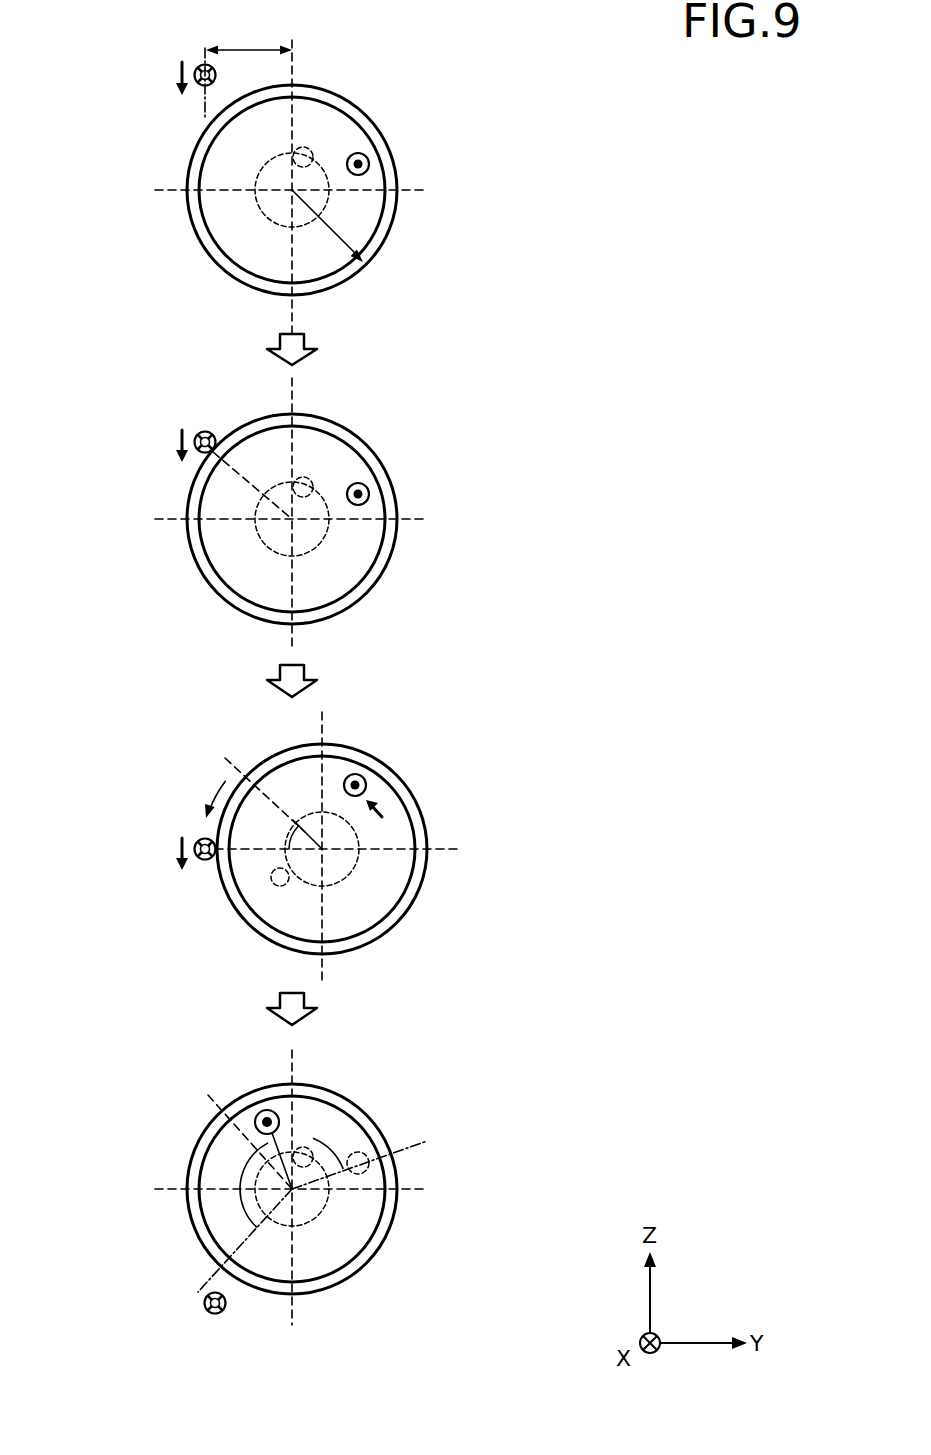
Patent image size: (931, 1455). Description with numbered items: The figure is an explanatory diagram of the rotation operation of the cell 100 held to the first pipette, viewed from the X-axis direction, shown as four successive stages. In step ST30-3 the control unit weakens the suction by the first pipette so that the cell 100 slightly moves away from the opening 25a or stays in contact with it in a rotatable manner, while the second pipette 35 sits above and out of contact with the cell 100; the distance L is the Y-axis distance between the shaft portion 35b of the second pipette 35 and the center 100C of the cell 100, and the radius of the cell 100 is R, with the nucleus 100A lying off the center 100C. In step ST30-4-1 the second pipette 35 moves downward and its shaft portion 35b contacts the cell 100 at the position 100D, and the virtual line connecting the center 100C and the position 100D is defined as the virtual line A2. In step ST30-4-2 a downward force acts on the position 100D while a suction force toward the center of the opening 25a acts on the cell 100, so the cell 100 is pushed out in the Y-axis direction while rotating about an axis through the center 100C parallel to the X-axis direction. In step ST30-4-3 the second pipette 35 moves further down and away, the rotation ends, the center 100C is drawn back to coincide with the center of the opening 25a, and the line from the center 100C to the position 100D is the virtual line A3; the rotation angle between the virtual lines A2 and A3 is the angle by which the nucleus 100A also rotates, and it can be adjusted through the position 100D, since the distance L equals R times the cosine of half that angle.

The cell 100 is at (308, 85).
The opening of the first pipette 25a is at (300, 147).
The center of the cell 100C is at (292, 190).
The nucleus 100A is at (369, 163).
The position of the cell 100D is at (222, 448).
The second pipette 35 is at (152, 690).
The shaft portion of the second pipette 35b is at (197, 84).
The radius of the cell R is at (334, 240).
The distance L is at (249, 39).
The virtual line A2 is at (192, 431).
The virtual line A3 is at (227, 1280).
The step of weakening suction by the first pipette ST30-3 is at (474, 56).
The step of second pipette contacting the cell ST30-4-1 is at (474, 386).
The step of cell rotation ST30-4-2 is at (474, 716).
The step of rotation ending ST30-4-3 is at (474, 1054).